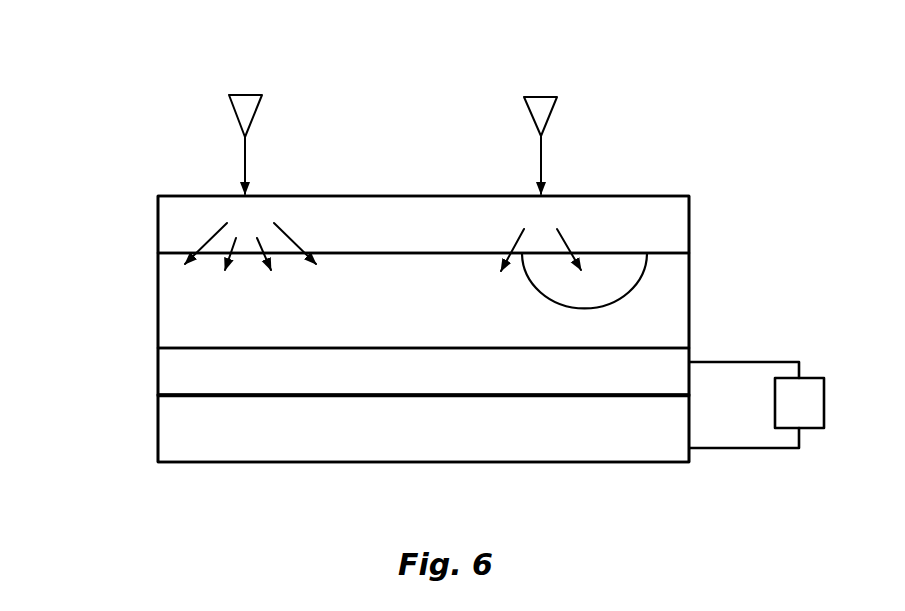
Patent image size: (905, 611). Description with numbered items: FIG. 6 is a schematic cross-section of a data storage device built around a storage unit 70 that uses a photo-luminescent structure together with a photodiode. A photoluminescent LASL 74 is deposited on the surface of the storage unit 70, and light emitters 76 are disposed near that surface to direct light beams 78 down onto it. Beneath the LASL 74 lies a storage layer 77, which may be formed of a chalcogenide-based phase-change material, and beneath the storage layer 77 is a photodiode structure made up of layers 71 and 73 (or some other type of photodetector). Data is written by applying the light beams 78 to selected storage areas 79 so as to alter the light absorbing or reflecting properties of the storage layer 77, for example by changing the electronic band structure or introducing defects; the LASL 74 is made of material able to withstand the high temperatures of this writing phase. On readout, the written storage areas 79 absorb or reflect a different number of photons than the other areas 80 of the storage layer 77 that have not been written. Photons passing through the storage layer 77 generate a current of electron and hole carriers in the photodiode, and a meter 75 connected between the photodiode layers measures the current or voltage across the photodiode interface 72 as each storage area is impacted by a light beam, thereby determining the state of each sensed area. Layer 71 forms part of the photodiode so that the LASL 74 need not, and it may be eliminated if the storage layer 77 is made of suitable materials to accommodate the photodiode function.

The storage unit 70 is at (88, 323).
The photodiode layer 71 is at (158, 369).
The photodiode interface 72 is at (192, 394).
The photodiode layer 73 is at (158, 433).
The photoluminescent LASL 74 is at (158, 235).
The meter 75 is at (820, 378).
The light emitters 76 is at (238, 95).
The storage layer 77 is at (690, 285).
The light beams 78 is at (245, 149).
The storage areas 79 is at (569, 189).
The other areas 80 is at (292, 189).